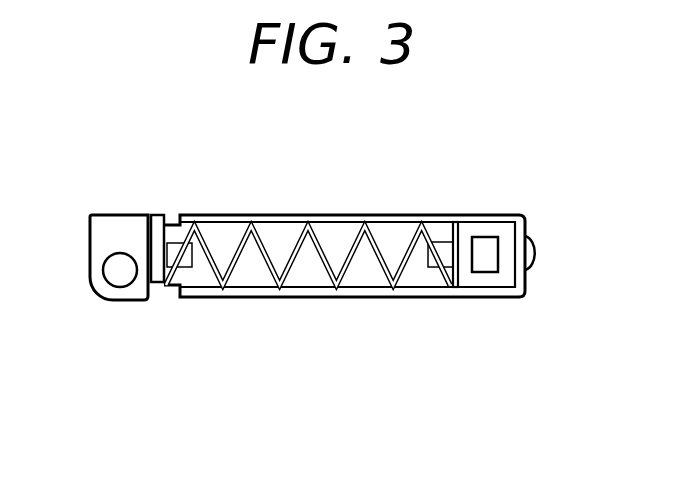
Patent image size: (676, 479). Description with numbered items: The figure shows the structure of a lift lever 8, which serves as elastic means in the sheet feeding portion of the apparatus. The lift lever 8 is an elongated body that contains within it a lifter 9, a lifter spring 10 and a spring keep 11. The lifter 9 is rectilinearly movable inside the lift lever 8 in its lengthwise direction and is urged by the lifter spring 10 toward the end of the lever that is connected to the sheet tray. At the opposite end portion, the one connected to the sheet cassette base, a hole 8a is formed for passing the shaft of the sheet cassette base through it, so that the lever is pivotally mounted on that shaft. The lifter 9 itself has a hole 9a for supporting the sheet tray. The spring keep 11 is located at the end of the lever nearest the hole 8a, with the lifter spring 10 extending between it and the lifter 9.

The lift lever 8 is at (403, 215).
The hole 8a is at (123, 283).
The lifter 9 is at (492, 227).
The hole 9a is at (490, 268).
The lifter spring 10 is at (322, 236).
The spring keep 11 is at (160, 208).